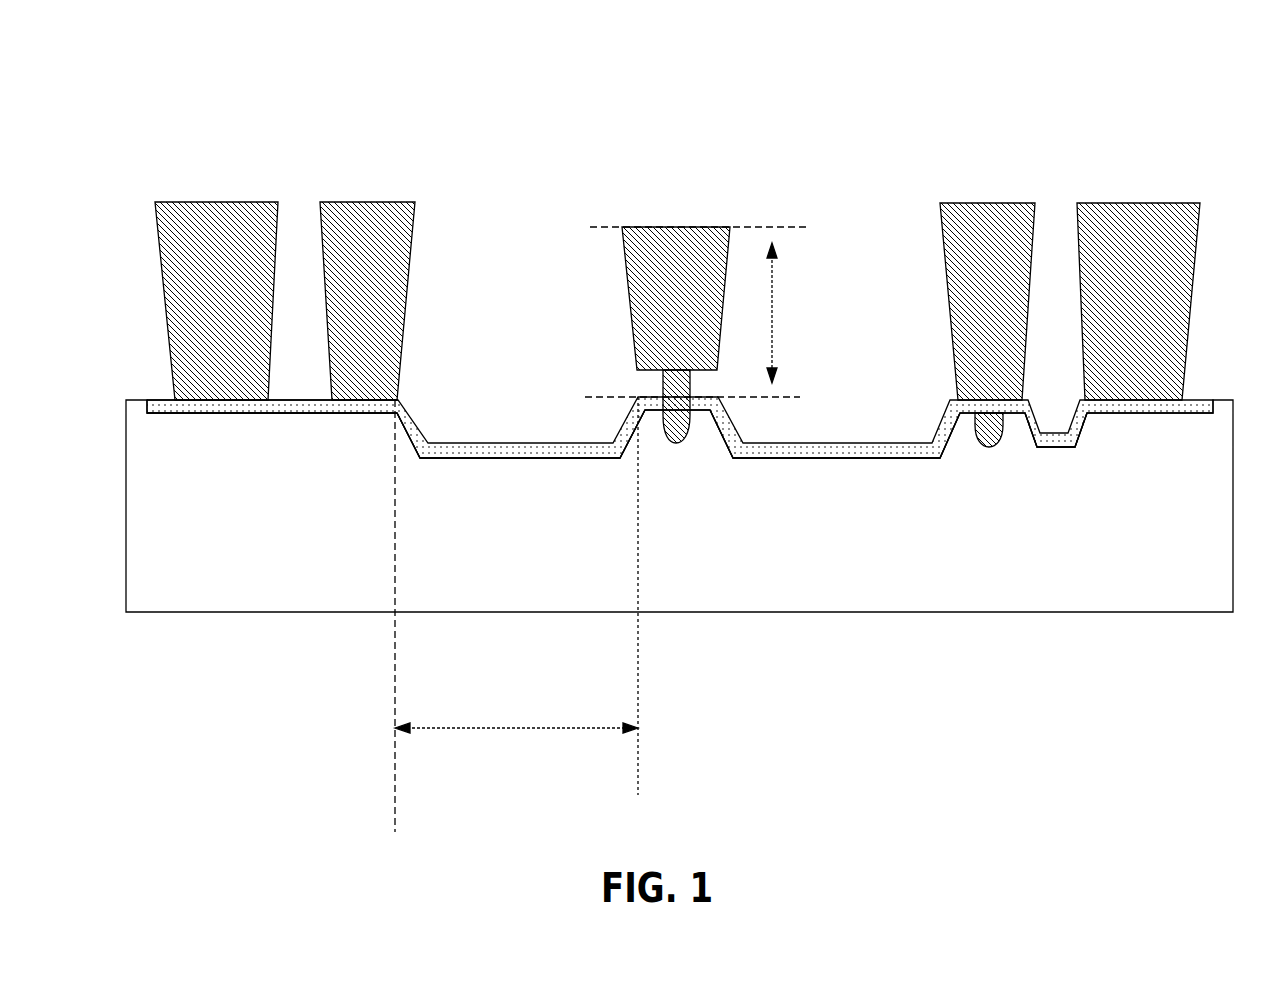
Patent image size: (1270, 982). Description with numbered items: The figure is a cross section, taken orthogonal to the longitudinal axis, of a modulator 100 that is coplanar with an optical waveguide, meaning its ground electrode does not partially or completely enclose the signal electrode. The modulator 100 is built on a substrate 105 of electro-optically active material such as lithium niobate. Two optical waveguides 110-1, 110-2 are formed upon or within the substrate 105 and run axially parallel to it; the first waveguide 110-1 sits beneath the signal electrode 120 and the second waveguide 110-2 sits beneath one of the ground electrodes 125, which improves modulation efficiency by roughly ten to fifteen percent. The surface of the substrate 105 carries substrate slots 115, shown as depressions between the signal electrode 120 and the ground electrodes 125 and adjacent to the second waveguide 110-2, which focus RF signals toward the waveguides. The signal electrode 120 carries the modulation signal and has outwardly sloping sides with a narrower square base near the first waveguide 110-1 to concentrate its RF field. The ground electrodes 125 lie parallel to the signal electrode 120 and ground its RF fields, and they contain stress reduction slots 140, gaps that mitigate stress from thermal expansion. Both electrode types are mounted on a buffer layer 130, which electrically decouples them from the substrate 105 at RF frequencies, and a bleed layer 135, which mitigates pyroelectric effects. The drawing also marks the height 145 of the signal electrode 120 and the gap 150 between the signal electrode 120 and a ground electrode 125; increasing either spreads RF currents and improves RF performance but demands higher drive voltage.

The modulator 100 is at (190, 61).
The substrate 105 is at (283, 612).
The waveguide 110-1 is at (681, 445).
The waveguide 110-2 is at (988, 447).
The substrate slots 115 is at (523, 458).
The signal electrode 120 is at (675, 226).
The ground electrodes 125 is at (215, 202).
The buffer layer 130 is at (283, 413).
The bleed layer 135 is at (467, 443).
The stress reduction slots 140 is at (290, 240).
The height 145 is at (696, 312).
The gap 150 is at (516, 614).